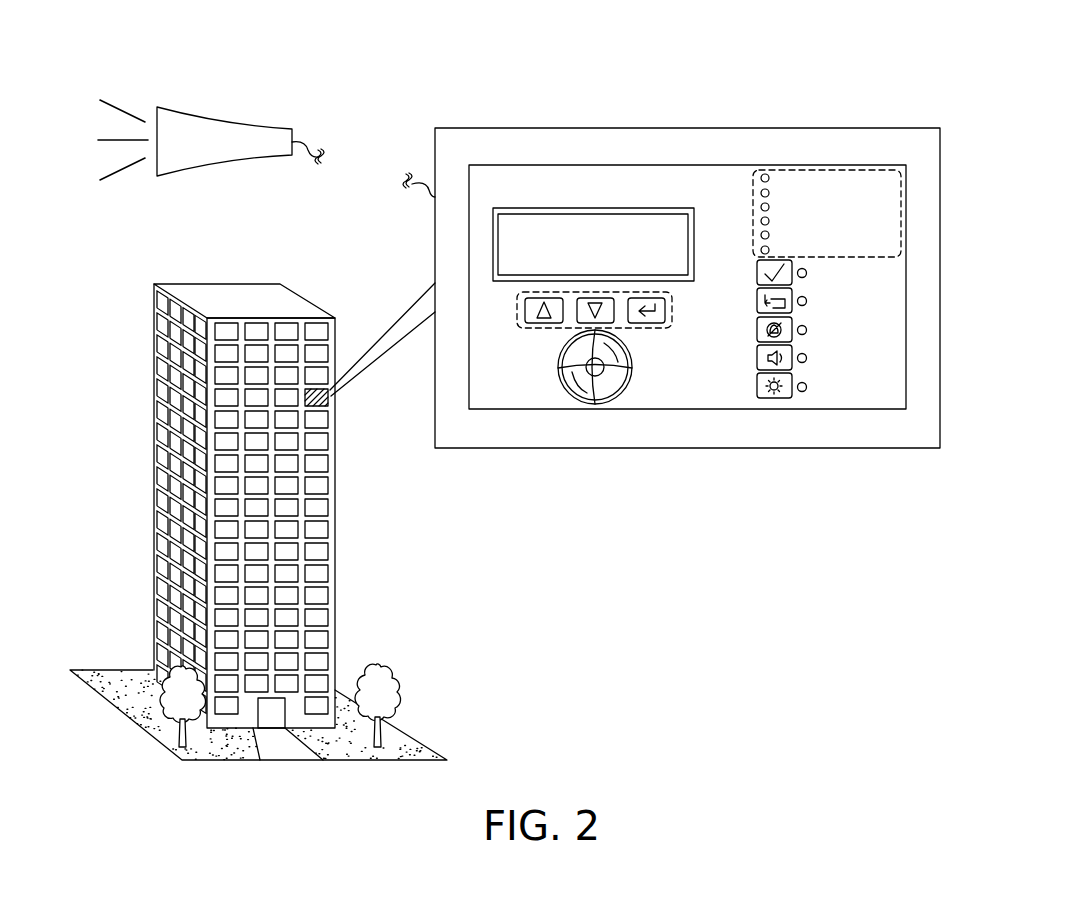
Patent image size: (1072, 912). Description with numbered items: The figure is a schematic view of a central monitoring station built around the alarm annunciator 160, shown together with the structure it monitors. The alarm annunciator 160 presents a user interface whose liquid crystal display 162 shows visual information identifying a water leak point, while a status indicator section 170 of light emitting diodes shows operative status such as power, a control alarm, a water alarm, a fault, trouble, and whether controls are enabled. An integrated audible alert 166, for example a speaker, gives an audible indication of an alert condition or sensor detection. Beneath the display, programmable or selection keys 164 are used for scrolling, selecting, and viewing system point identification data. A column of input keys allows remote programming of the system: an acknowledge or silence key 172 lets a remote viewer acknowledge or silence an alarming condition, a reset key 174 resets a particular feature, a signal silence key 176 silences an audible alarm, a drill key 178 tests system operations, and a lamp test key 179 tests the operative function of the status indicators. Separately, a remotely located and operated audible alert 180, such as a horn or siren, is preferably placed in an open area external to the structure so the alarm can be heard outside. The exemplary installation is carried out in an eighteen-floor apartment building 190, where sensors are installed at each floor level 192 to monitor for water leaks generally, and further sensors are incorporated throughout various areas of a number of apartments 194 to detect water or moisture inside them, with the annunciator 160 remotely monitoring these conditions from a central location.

The alarm annunciator 160 is at (694, 127).
The liquid crystal display 162 is at (582, 219).
The programmable keys or selection keys 164 is at (517, 311).
The audible alert 166 is at (567, 392).
The status indicator section 170 is at (905, 213).
The acknowledge or silence key 172 is at (889, 272).
The reset key 174 is at (848, 300).
The signal silence key 176 is at (903, 330).
The drill key 178 is at (847, 357).
The lamp test key 179 is at (780, 400).
The remotely located and operated audible alert 180 is at (223, 119).
The apartment building 190 is at (243, 297).
The floor level 192 is at (330, 605).
The apartments 194 is at (162, 500).